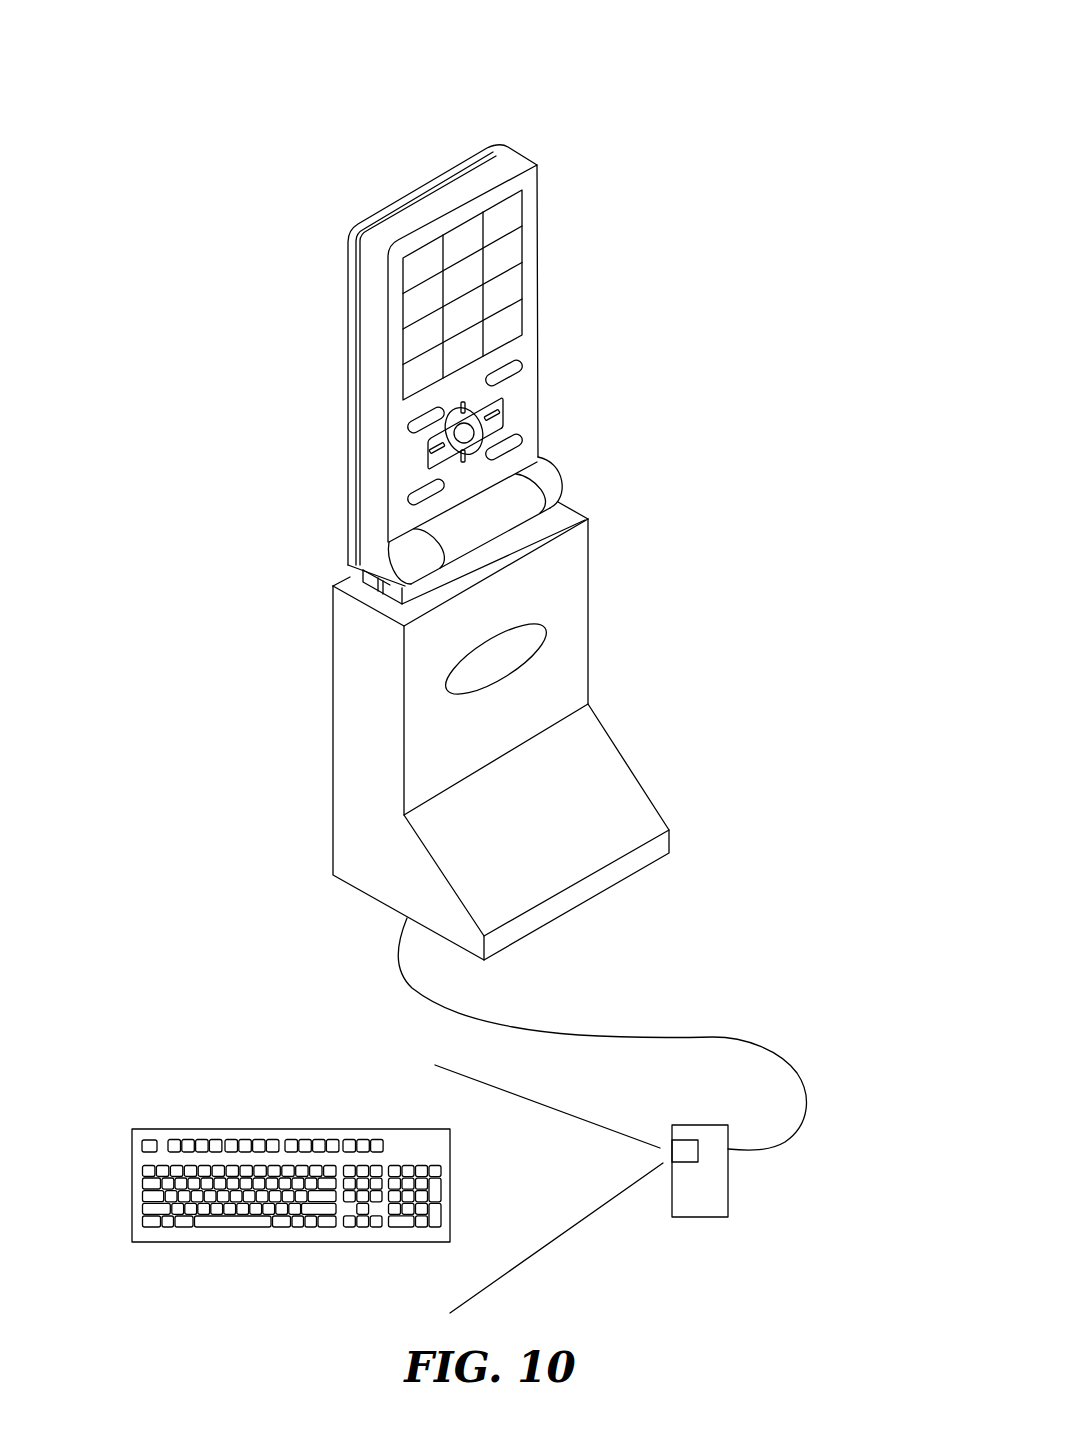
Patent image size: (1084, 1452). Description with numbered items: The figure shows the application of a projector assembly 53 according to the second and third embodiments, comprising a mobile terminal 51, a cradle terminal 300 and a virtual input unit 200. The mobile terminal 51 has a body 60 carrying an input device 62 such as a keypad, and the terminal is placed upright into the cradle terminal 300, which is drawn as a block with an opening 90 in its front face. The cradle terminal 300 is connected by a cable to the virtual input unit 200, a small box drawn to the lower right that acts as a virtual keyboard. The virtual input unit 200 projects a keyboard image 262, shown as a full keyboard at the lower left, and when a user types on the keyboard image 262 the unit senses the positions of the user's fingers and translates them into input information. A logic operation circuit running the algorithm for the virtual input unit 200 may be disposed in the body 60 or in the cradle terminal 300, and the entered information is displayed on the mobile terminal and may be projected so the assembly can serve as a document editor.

The projector assembly 53 is at (612, 303).
The body 60 is at (380, 158).
The input device 62 is at (507, 218).
The mobile terminal 51 is at (530, 385).
The cradle terminal 300 is at (637, 569).
The sensor window 90 is at (515, 654).
The keyboard image 262 is at (265, 1129).
The virtual input unit 200 is at (728, 1188).